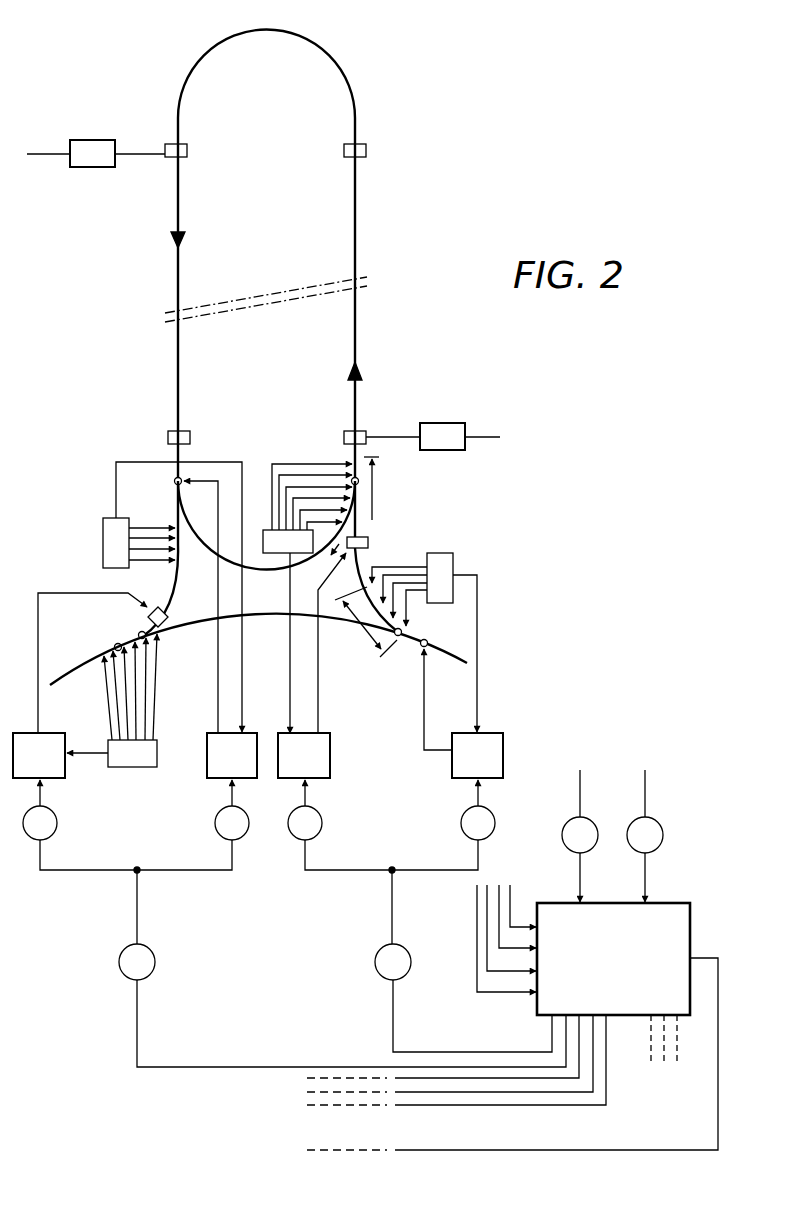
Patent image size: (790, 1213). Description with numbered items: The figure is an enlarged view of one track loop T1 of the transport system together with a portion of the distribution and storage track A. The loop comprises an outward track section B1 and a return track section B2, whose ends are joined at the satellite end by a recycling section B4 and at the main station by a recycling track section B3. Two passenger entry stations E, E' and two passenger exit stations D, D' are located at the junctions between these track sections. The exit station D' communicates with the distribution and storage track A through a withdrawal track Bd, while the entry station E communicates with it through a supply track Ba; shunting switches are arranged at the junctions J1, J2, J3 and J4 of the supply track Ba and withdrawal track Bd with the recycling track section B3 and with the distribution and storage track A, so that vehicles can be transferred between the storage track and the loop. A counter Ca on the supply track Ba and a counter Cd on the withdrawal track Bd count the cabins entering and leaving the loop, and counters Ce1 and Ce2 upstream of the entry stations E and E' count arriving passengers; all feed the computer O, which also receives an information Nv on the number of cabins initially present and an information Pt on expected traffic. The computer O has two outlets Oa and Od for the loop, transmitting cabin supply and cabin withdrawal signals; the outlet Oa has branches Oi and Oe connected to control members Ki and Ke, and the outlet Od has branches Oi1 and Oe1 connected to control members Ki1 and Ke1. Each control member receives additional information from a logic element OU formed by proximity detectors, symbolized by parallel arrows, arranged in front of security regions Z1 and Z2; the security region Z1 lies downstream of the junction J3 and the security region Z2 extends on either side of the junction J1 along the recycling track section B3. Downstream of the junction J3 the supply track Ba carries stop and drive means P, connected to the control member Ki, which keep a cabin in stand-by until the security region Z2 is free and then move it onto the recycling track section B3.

The recycling section B4 is at (330, 56).
The track section B2 is at (177, 350).
The track section B1 is at (357, 335).
The track loop T1 is at (359, 235).
The passenger entry station E' is at (194, 153).
The passenger exit station D is at (371, 153).
The counter Ce2 is at (92, 168).
The passenger exit station D' is at (158, 430).
The passenger entry station E is at (368, 425).
The counter Ce1 is at (436, 423).
The recycling track section B3 is at (264, 573).
The junction J2 is at (175, 481).
The junction J1 is at (359, 481).
The logic element OU is at (272, 615).
The security region Z2 is at (380, 490).
The supply track Ba is at (370, 556).
The stop and drive means P is at (353, 552).
The withdrawal track Bd is at (177, 583).
The counter Cd is at (139, 633).
The junction J4 is at (114, 647).
The distribution and storage track A is at (268, 617).
The security region Z1 is at (366, 625).
The counter Ca is at (398, 636).
The junction J3 is at (428, 643).
The control member Ki1 is at (39, 755).
The control member Ke1 is at (232, 755).
The control member Ki is at (304, 755).
The control member Ke is at (477, 755).
The branch Oi1 is at (49, 819).
The branch Oe1 is at (216, 820).
The branch Oi is at (314, 819).
The branch Oe is at (462, 818).
The outlet Od is at (342, 968).
The outlet Oa is at (463, 961).
The information relating to the number of cabins Nv is at (580, 836).
The information relating to the amount of expected traffic Pt is at (645, 836).
The computer O is at (512, 1017).